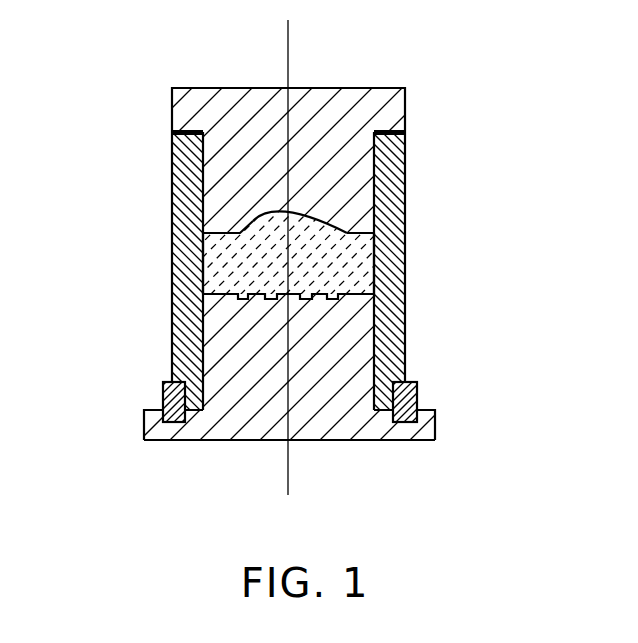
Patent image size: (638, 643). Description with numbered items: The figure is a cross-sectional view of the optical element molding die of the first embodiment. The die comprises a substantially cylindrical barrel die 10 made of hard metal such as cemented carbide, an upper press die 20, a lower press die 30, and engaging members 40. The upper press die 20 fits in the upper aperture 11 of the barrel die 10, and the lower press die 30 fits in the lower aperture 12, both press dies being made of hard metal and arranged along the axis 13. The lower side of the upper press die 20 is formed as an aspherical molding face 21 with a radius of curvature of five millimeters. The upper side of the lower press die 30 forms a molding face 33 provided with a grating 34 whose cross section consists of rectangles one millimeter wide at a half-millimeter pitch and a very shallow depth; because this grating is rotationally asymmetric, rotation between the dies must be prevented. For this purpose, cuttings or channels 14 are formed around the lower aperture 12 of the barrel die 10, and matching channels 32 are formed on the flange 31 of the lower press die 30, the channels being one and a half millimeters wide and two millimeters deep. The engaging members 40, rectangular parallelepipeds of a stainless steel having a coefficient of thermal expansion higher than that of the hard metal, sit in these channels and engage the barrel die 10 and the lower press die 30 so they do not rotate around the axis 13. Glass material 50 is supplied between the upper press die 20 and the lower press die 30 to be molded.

The barrel die 10 is at (405, 198).
The upper aperture 11 is at (407, 132).
The lower aperture 12 is at (375, 418).
The axis 13 is at (290, 60).
The channels 14 is at (163, 398).
The upper press die 20 is at (353, 88).
The molding face 21 is at (257, 218).
The lower press die 30 is at (333, 440).
The flange 31 is at (172, 440).
The channels 32 is at (147, 416).
The molding face 33 is at (374, 288).
The grating 34 is at (323, 289).
The engaging members 40 is at (163, 400).
The glass material 50 is at (175, 242).